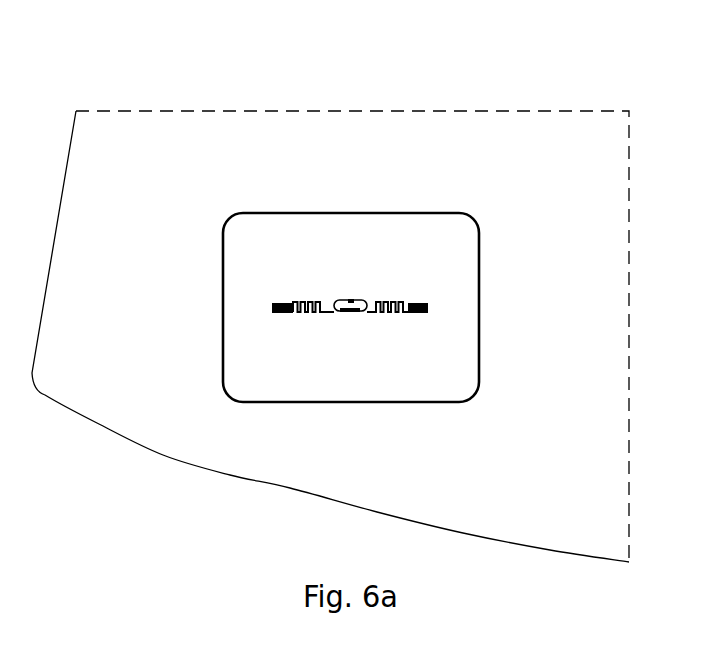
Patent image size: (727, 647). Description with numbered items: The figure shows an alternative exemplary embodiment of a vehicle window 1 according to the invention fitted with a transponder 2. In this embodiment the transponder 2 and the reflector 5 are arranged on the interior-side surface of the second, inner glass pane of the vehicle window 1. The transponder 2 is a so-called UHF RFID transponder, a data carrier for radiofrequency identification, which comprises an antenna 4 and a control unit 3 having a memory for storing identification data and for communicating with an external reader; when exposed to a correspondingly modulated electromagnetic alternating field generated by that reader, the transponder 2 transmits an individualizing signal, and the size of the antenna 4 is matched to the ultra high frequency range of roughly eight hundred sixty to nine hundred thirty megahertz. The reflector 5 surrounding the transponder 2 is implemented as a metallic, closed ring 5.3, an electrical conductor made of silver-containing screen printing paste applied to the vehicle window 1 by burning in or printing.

The vehicle window 1 is at (517, 77).
The transponder 2 is at (213, 67).
The control unit 3 is at (348, 297).
The antenna 4 is at (295, 297).
The reflector 5 is at (309, 381).
The metallic, closed ring 5.3 is at (265, 410).